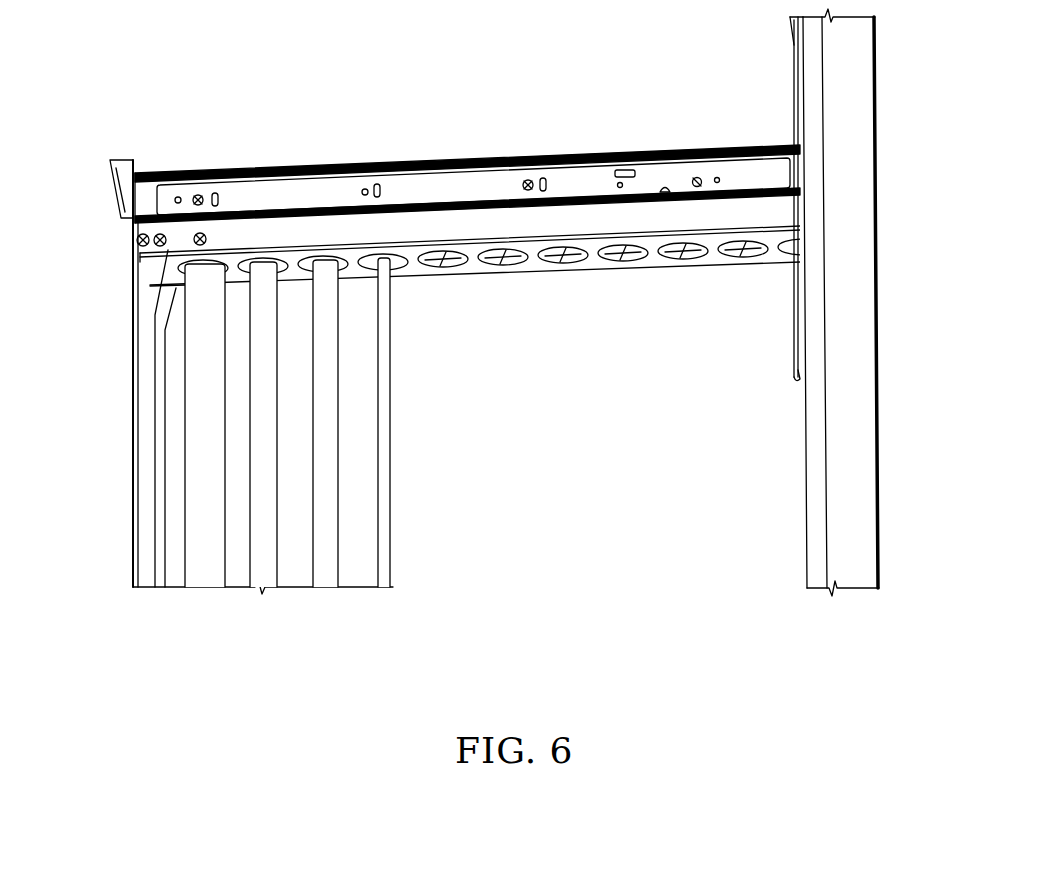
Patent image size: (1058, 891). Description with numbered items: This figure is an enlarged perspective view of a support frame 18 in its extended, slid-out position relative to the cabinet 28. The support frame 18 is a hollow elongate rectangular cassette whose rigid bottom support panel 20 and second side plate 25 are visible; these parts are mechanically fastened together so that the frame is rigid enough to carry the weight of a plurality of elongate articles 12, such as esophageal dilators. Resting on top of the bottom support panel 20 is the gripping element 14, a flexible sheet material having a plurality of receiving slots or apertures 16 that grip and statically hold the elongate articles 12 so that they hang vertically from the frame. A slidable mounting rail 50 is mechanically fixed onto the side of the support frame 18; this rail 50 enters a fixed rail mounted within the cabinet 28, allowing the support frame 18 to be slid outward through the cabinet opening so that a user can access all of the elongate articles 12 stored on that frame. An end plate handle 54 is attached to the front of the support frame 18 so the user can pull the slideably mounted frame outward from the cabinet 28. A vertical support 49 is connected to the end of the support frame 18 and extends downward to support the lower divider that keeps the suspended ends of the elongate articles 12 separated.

The elongate articles 12 is at (203, 548).
The gripping element 14 is at (678, 253).
The receiving slots or apertures 16 is at (618, 252).
The support frame 18 is at (133, 223).
The bottom support panel 20 is at (477, 267).
The second side plate 25 is at (752, 212).
The cabinet 28 is at (858, 400).
The vertical support 49 is at (135, 498).
The slidable mounting rail 50 is at (465, 188).
The end plate handle 54 is at (112, 160).